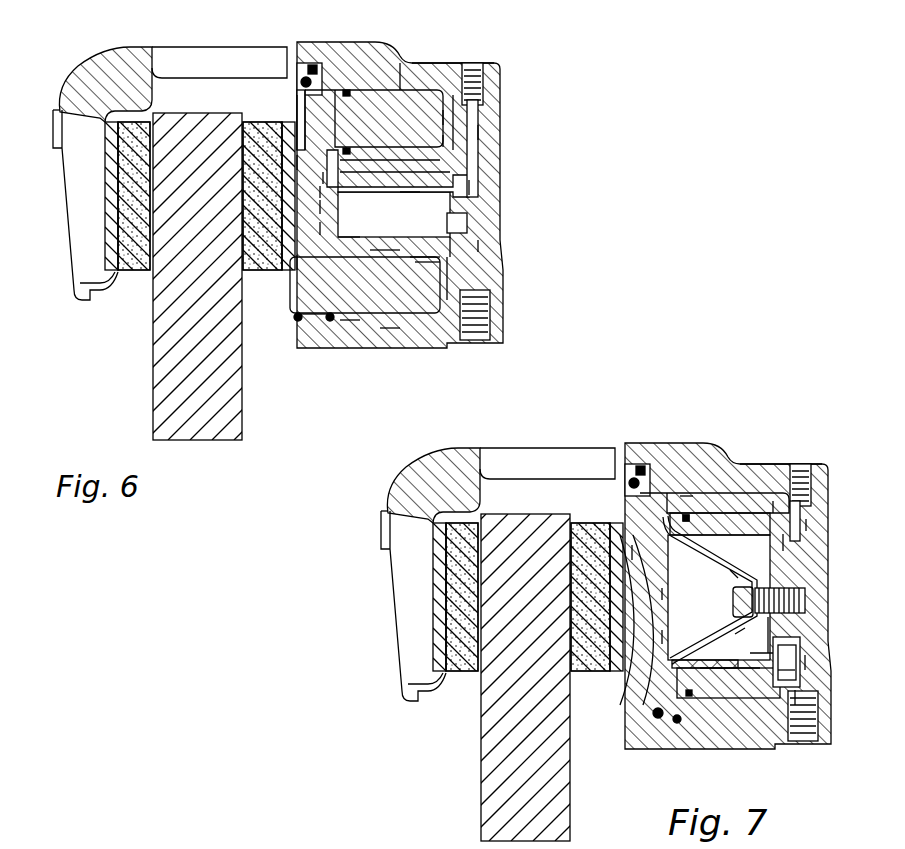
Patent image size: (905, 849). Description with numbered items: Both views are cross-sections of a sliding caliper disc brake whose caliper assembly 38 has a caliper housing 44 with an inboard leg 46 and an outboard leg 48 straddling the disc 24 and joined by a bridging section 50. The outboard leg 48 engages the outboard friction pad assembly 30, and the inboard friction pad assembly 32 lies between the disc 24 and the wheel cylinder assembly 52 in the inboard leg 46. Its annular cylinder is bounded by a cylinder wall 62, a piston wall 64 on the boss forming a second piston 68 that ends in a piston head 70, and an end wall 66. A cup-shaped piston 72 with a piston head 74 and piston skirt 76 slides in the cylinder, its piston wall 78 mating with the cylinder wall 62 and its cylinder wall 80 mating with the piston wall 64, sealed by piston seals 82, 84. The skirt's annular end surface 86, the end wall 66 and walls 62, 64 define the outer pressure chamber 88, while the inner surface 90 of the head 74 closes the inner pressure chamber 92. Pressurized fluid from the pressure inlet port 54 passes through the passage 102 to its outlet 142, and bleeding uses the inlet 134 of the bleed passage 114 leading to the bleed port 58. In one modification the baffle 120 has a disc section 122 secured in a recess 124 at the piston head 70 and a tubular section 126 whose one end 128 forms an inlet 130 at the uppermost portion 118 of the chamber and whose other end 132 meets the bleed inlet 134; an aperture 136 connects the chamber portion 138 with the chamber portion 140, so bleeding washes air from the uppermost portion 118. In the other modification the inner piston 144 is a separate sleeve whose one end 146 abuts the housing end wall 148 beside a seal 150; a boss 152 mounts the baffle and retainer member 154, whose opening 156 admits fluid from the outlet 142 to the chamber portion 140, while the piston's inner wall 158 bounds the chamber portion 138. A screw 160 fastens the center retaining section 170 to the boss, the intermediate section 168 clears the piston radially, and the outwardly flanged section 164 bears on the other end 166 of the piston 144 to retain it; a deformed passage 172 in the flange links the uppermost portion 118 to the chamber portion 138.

In FIG. 6, the disc 24 is at (158, 345).
In FIG. 7, the disc 24 is at (520, 677).
In FIG. 6, the outboard friction pad assembly 30 is at (129, 278).
In FIG. 7, the outboard friction pad assembly 30 is at (453, 614).
In FIG. 6, the inboard friction pad assembly 32 is at (258, 280).
In FIG. 7, the inboard friction pad assembly 32 is at (597, 604).
In FIG. 6, the caliper assembly 38 is at (86, 67).
In FIG. 7, the caliper assembly 38 is at (379, 485).
In FIG. 6, the caliper housing 44 is at (118, 72).
In FIG. 7, the caliper housing 44 is at (433, 474).
In FIG. 6, the inboard leg 46 is at (420, 63).
In FIG. 7, the inboard leg 46 is at (728, 576).
In FIG. 6, the outboard leg 48 is at (75, 200).
In FIG. 7, the outboard leg 48 is at (392, 606).
In FIG. 6, the bridging section 50 is at (210, 60).
In FIG. 7, the bridging section 50 is at (547, 445).
In FIG. 6, the wheel cylinder assembly 52 is at (449, 58).
In FIG. 7, the wheel cylinder assembly 52 is at (781, 434).
In FIG. 6, the pressure inlet port 54 is at (468, 340).
In FIG. 7, the pressure inlet port 54 is at (816, 732).
In FIG. 6, the bleed port 58 is at (478, 68).
In FIG. 7, the bleed port 58 is at (812, 460).
In FIG. 6, the cylinder wall 62 is at (380, 95).
In FIG. 7, the cylinder wall 62 is at (714, 470).
In FIG. 6, the piston wall 64 is at (421, 262).
In FIG. 6, the end wall 66 is at (446, 140).
In FIG. 6, the second piston 68 is at (426, 262).
In FIG. 6, the piston head 70 is at (298, 314).
In FIG. 6, the cup-shaped piston 72 is at (300, 70).
In FIG. 7, the cup-shaped piston 72 is at (617, 457).
In FIG. 6, the piston head 74 is at (300, 163).
In FIG. 7, the piston head 74 is at (632, 552).
In FIG. 6, the piston skirt 76 is at (392, 328).
In FIG. 7, the piston skirt 76 is at (679, 452).
In FIG. 6, the piston wall 78 is at (408, 88).
In FIG. 7, the piston wall 78 is at (748, 520).
In FIG. 6, the cylinder wall 80 is at (352, 262).
In FIG. 6, the piston seal 82 is at (350, 322).
In FIG. 7, the piston seal 82 is at (688, 718).
In FIG. 6, the piston seal 84 is at (347, 150).
In FIG. 7, the piston seal 84 is at (707, 718).
In FIG. 6, the annular end surface 86 is at (450, 117).
In FIG. 7, the annular end surface 86 is at (783, 473).
In FIG. 6, the outer pressure chamber 88 is at (470, 105).
In FIG. 7, the outer pressure chamber 88 is at (827, 516).
In FIG. 6, the inner surface 90 is at (322, 192).
In FIG. 6, the inner pressure chamber 92 is at (322, 207).
In FIG. 7, the inner pressure chamber 92 is at (663, 594).
In FIG. 6, the pressure inlet passage 102 is at (478, 246).
In FIG. 7, the pressure inlet passage 102 is at (805, 663).
In FIG. 6, the bleed passage 114 is at (478, 133).
In FIG. 7, the bleed passage 114 is at (845, 523).
In FIG. 6, the uppermost portion 118 is at (350, 90).
In FIG. 7, the uppermost portion 118 is at (662, 468).
In FIG. 6, the baffle 120 is at (402, 170).
In FIG. 6, the disc section 122 is at (330, 245).
In FIG. 6, the recess 124 is at (383, 250).
In FIG. 6, the tubular section 126 is at (410, 193).
In FIG. 6, the one end 128 is at (325, 178).
In FIG. 6, the inlet 130 is at (297, 110).
In FIG. 6, the other end 132 is at (462, 191).
In FIG. 6, the inlet 134 is at (468, 187).
In FIG. 7, the inlet 134 is at (826, 547).
In FIG. 6, the aperture 136 is at (322, 228).
In FIG. 6, the chamber portion 138 is at (374, 168).
In FIG. 7, the chamber portion 138 is at (817, 576).
In FIG. 6, the chamber portion 140 is at (298, 262).
In FIG. 7, the chamber portion 140 is at (664, 637).
In FIG. 6, the outlet 142 is at (460, 222).
In FIG. 7, the outlet 142 is at (790, 630).
In FIG. 7, the inner piston 144 is at (721, 704).
In FIG. 7, the one end 146 is at (785, 674).
In FIG. 7, the end wall 148 is at (737, 660).
In FIG. 7, the seal 150 is at (800, 697).
In FIG. 7, the boss 152 is at (783, 611).
In FIG. 7, the baffle and retainer member 154 is at (733, 670).
In FIG. 7, the opening 156 is at (786, 652).
In FIG. 7, the inner wall 158 is at (717, 545).
In FIG. 7, the screw 160 is at (733, 612).
In FIG. 7, the outwardly flanged section 164 is at (633, 713).
In FIG. 7, the other end 166 is at (670, 722).
In FIG. 7, the intermediate section 168 is at (738, 565).
In FIG. 7, the center retaining section 170 is at (752, 625).
In FIG. 7, the passage 172 is at (640, 530).